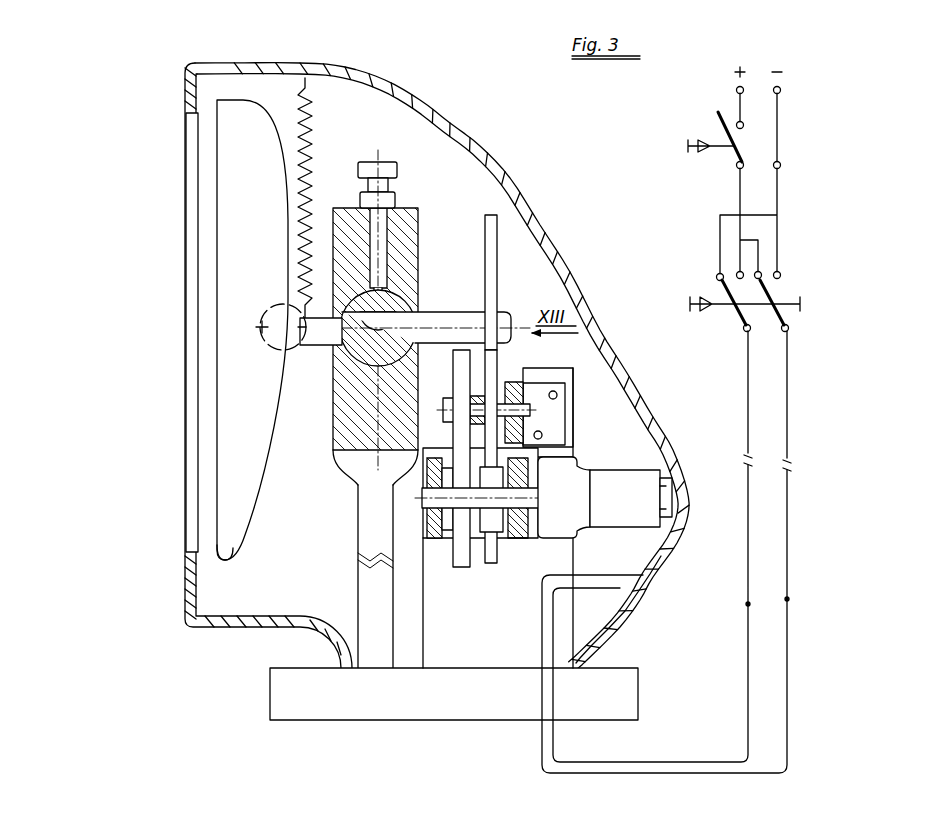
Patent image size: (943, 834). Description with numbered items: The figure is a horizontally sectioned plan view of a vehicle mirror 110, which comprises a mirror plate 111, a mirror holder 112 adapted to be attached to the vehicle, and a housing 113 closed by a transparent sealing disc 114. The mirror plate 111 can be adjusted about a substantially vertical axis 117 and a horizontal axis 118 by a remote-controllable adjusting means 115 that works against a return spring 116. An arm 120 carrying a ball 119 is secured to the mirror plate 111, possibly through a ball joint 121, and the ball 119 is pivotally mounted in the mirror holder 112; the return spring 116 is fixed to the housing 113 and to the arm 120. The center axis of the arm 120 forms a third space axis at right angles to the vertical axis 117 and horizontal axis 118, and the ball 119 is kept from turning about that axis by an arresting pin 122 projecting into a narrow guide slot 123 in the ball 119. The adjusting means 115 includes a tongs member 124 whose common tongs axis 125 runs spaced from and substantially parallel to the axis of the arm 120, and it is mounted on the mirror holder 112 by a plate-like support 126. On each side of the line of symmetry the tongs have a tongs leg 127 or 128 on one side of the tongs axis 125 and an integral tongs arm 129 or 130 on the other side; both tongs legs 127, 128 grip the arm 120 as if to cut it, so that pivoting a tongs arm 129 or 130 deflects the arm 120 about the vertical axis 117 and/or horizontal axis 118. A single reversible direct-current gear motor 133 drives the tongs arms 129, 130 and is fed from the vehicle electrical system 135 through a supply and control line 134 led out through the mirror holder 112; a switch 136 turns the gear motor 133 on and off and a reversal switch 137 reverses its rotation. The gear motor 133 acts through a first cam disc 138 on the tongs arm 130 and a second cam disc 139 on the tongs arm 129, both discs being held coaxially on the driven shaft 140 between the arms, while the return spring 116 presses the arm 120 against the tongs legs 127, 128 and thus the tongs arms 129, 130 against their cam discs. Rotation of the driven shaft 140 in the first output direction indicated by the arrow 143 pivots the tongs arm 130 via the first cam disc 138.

The mirror 110 is at (520, 131).
The mirror plate 111 is at (215, 542).
The mirror holder 112 is at (345, 447).
The housing 113 is at (410, 100).
The transparent sealing disc 114 is at (190, 542).
The adjusting means 115 is at (640, 444).
The return spring 116 is at (302, 108).
The vertical axis 117 is at (378, 330).
The horizontal axis 118 is at (460, 358).
The ball 119 is at (350, 344).
The arm 120 is at (345, 272).
The ball joint 121 is at (262, 326).
The arresting pin 122 is at (372, 240).
The guide slot 123 is at (330, 312).
The tongs member 124 is at (512, 300).
The tongs axis 125 is at (553, 410).
The plate-like support 126 is at (478, 656).
The tongs leg 127 is at (365, 428).
The tongs leg 128 is at (487, 238).
The tongs arm 129 is at (463, 557).
The tongs arm 130 is at (493, 562).
The gear motor 133 is at (638, 480).
The supply and control line 134 is at (787, 599).
The vehicle electrical system 135 is at (778, 104).
The switch 136 is at (697, 143).
The reversal switch 137 is at (700, 303).
The first cam disc 138 is at (493, 515).
The second cam disc 139 is at (450, 522).
The driven shaft 140 is at (565, 478).
The arrow 143 is at (622, 448).